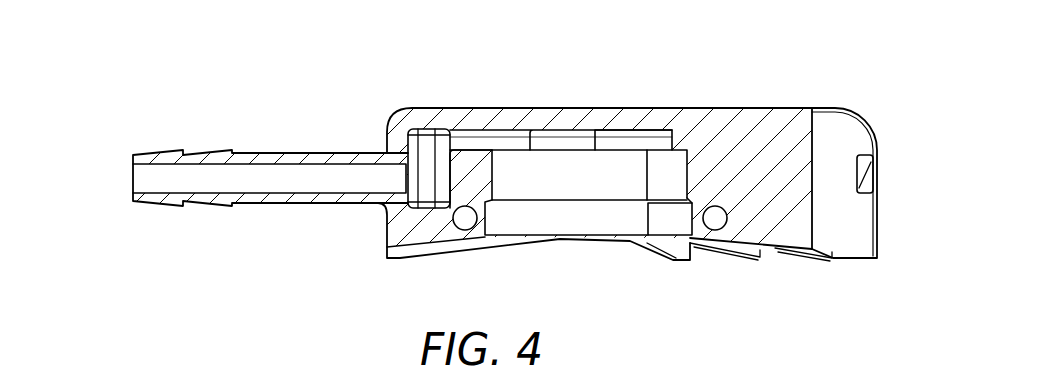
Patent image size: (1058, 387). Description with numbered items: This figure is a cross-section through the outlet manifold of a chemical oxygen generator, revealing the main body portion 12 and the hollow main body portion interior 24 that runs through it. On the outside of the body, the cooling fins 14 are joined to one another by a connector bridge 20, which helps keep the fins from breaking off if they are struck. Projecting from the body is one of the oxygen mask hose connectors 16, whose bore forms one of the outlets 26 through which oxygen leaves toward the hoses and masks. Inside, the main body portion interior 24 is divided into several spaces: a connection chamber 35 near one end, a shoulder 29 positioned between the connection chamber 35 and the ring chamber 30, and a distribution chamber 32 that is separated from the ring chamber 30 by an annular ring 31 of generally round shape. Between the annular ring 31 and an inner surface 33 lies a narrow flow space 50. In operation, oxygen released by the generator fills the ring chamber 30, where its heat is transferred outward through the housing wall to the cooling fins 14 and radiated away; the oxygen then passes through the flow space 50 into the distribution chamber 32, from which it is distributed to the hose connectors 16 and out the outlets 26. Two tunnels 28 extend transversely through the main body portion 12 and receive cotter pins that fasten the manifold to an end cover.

The main body portion 12 is at (762, 120).
The cooling fins 14 is at (845, 133).
The oxygen mask hose connectors 16 is at (303, 153).
The connector bridge 20 is at (873, 173).
The main body portion interior 24 is at (571, 168).
The outlets 26 is at (143, 178).
The tunnels 28 is at (466, 222).
The shoulder 29 is at (687, 208).
The ring chamber 30 is at (668, 170).
The annular ring 31 is at (473, 165).
The distribution chamber 32 is at (427, 150).
The inner surface 33 is at (597, 133).
The connection chamber 35 is at (668, 230).
The flow space 50 is at (470, 140).